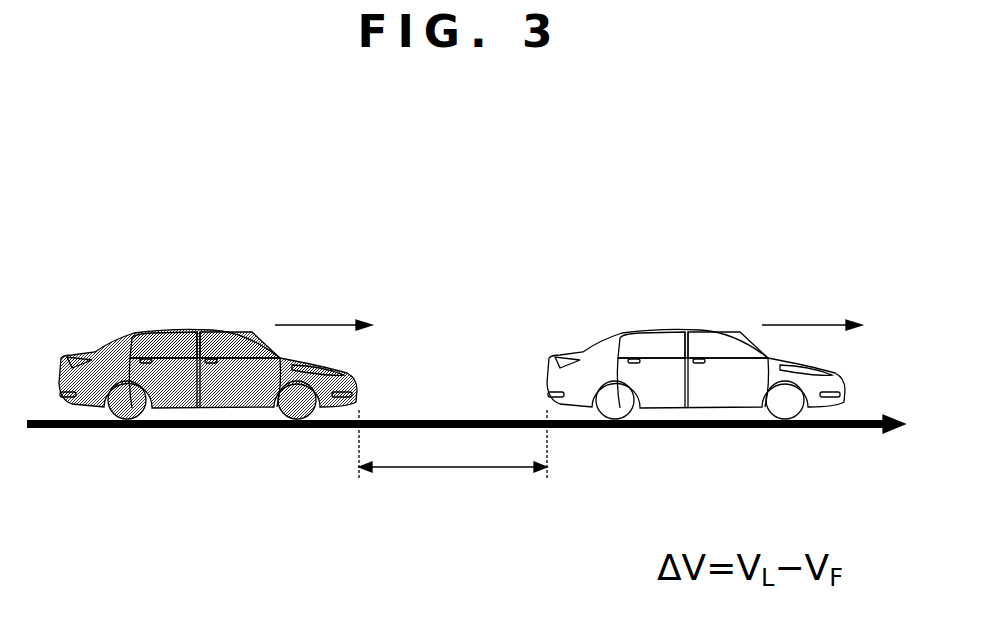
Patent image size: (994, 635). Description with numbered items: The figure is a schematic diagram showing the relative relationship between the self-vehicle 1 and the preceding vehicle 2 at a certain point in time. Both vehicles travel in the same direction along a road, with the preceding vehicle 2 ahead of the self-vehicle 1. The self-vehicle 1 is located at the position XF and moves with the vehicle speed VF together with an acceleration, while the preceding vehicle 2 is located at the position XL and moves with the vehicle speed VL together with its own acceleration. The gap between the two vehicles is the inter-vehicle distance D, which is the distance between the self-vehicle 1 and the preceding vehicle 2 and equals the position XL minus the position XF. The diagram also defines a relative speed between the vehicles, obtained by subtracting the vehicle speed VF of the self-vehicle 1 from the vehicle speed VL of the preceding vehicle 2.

The self-vehicle 1 is at (127, 318).
The preceding vehicle 2 is at (563, 318).
The inter-vehicle distance D is at (453, 493).
The position of the self-vehicle XF is at (364, 469).
The position of the preceding vehicle XL is at (552, 469).
The vehicle speed of the self-vehicle VF is at (323, 300).
The vehicle speed of the preceding vehicle VL is at (812, 300).